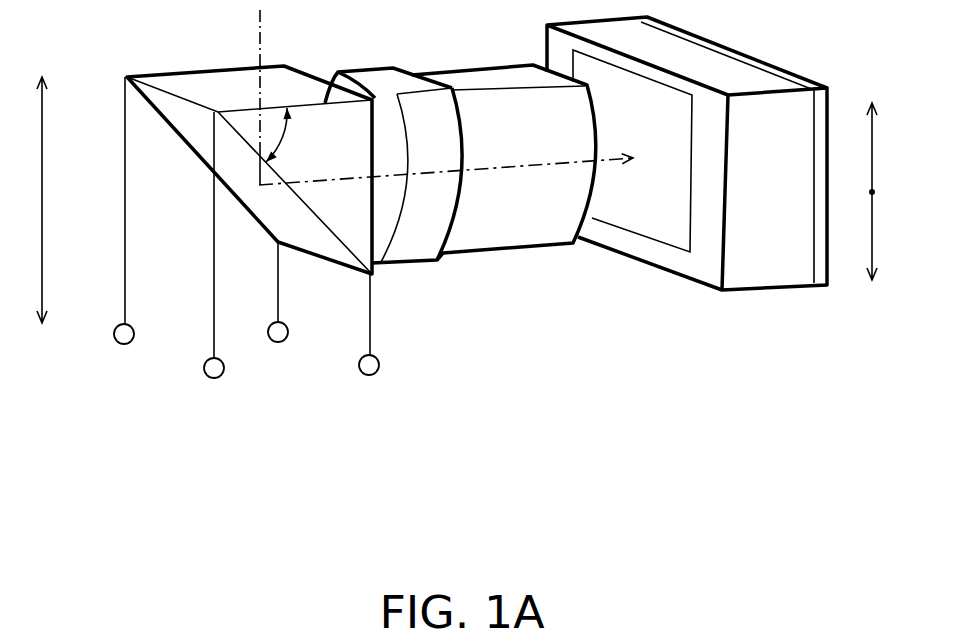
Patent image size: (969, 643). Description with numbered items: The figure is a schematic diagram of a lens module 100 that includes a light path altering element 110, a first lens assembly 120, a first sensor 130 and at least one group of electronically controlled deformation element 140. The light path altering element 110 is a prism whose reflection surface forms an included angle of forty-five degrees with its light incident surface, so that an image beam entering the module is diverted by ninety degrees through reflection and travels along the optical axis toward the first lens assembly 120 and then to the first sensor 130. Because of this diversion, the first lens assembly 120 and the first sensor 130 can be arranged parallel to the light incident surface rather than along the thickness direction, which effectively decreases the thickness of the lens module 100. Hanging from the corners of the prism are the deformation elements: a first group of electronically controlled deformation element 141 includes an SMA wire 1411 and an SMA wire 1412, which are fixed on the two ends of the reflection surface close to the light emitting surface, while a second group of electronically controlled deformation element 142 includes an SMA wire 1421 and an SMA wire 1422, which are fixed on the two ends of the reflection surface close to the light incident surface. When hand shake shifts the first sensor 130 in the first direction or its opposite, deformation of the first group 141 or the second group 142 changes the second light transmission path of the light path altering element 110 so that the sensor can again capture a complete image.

The lens module 100 is at (447, 248).
The light path altering element 110 is at (328, 250).
The first lens assembly 120 is at (487, 233).
The first sensor 130 is at (760, 257).
The group of electronically controlled deformation element 140 is at (212, 281).
The first group of electronically controlled deformation element 141 is at (298, 364).
The SMA wire 1411 is at (278, 302).
The SMA wire 1412 is at (346, 347).
The second group of electronically controlled deformation element 142 is at (134, 281).
The SMA wire 1421 is at (122, 305).
The SMA wire 1422 is at (181, 266).